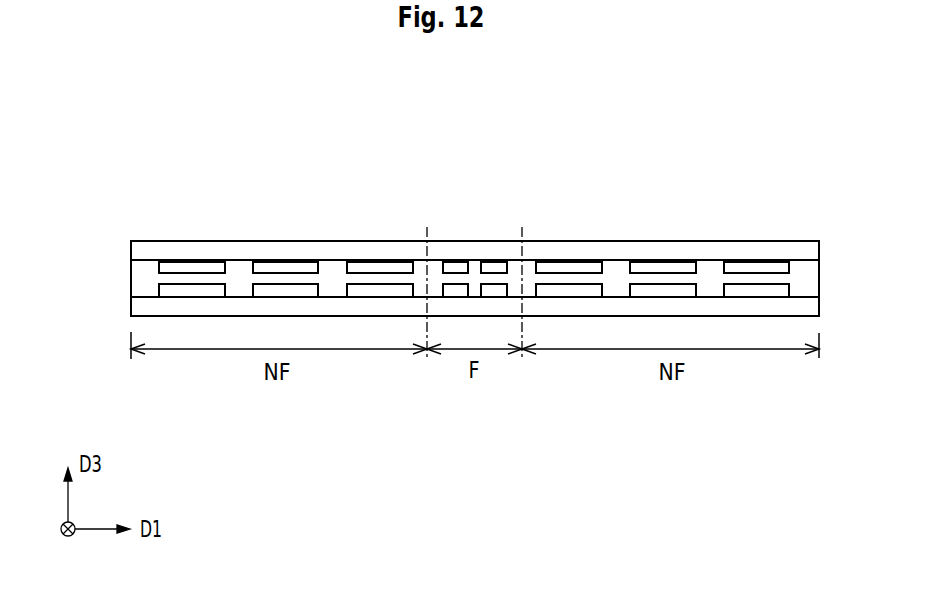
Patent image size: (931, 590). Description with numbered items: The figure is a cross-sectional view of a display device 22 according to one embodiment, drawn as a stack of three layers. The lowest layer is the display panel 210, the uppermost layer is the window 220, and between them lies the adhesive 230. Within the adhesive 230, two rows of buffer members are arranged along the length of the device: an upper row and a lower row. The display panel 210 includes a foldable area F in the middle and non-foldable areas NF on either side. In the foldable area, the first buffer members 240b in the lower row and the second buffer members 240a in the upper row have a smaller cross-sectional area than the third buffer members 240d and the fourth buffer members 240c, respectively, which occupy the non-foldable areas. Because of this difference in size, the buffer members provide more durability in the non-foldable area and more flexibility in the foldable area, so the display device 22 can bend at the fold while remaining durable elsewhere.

The display device 22 is at (494, 118).
The display panel 210 is at (140, 306).
The window 220 is at (240, 250).
The adhesive 230 is at (337, 278).
The second buffer member 240a is at (457, 268).
The first buffer member 240b is at (460, 288).
The fourth buffer member 240c is at (183, 267).
The third buffer member 240d is at (173, 290).